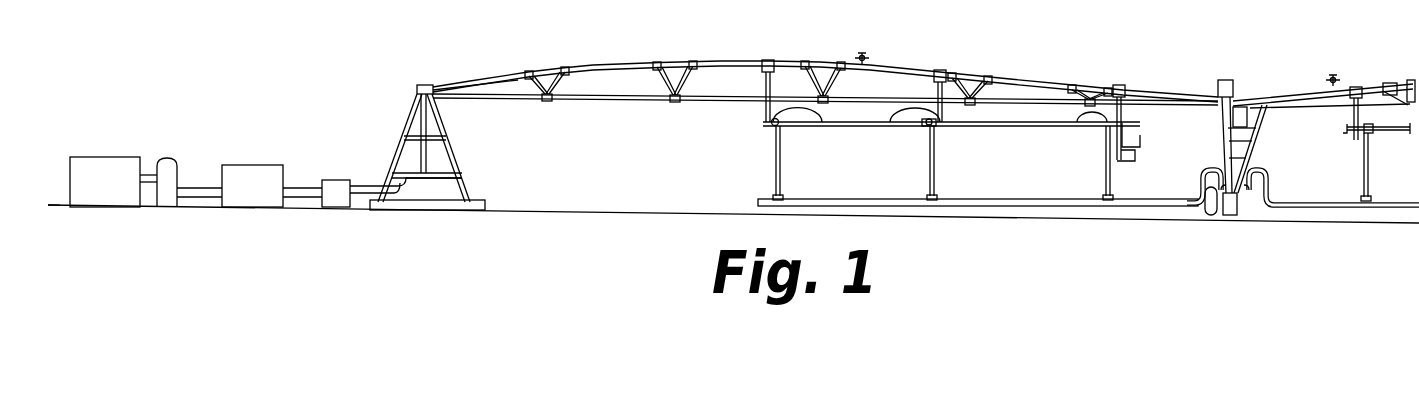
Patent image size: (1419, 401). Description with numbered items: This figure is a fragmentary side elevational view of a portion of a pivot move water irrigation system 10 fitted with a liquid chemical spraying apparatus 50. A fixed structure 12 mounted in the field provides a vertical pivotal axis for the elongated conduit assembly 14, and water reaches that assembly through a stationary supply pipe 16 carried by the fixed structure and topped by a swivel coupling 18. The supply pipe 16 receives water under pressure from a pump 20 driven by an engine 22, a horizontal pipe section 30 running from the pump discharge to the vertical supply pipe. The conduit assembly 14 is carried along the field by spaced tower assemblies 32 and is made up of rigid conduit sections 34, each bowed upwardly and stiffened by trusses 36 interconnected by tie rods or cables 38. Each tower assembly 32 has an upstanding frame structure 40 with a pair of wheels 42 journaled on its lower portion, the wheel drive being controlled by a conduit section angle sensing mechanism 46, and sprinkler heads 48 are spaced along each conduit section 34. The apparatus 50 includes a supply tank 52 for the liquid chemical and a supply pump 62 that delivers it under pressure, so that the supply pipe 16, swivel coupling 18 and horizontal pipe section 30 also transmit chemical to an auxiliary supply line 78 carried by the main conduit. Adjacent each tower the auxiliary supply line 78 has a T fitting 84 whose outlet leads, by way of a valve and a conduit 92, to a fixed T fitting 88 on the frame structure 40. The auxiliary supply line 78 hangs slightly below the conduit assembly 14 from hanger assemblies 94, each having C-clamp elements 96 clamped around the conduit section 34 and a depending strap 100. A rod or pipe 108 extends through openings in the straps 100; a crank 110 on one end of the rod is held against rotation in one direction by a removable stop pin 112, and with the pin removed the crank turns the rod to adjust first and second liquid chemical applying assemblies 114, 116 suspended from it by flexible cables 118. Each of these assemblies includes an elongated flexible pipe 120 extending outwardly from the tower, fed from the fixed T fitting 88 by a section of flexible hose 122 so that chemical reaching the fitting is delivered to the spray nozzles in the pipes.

The water irrigation system 10 is at (397, 86).
The fixed structure 12 is at (421, 126).
The conduit assembly 14 is at (596, 62).
The stationary supply pipe 16 is at (428, 155).
The swivel coupling 18 is at (425, 85).
The pump 20 is at (195, 137).
The engine 22 is at (97, 157).
The horizontal pipe section 30 is at (362, 192).
The tower assembly 32 is at (1228, 213).
The conduit section 34 is at (727, 62).
The truss 36 is at (573, 97).
The tie rods or cables 38 is at (510, 100).
The frame structure 40 is at (1259, 138).
The wheels 42 is at (1193, 190).
The conduit section angle sensing mechanism 46 is at (1236, 84).
The sprinkler heads 48 is at (863, 53).
The apparatus 50 is at (518, 80).
The supply tank 52 is at (264, 165).
The supply pump 62 is at (343, 180).
The auxiliary supply line 78 is at (907, 95).
The T fitting 84 is at (1215, 123).
The fixed T fitting 88 is at (1247, 158).
The conduit 92 is at (1230, 141).
The hanger assembly 94 is at (757, 116).
The C-clamp elements 96 is at (771, 60).
The strap 100 is at (812, 116).
The rod or pipe 108 is at (907, 128).
The crank 110 is at (1137, 157).
The stop pin 112 is at (1125, 90).
The first liquid chemical applying assembly 114 is at (1367, 212).
The second liquid chemical applying assembly 116 is at (985, 209).
The flexible cables 118 is at (929, 168).
The flexible pipe 120 is at (887, 200).
The flexible hose 122 is at (1258, 178).